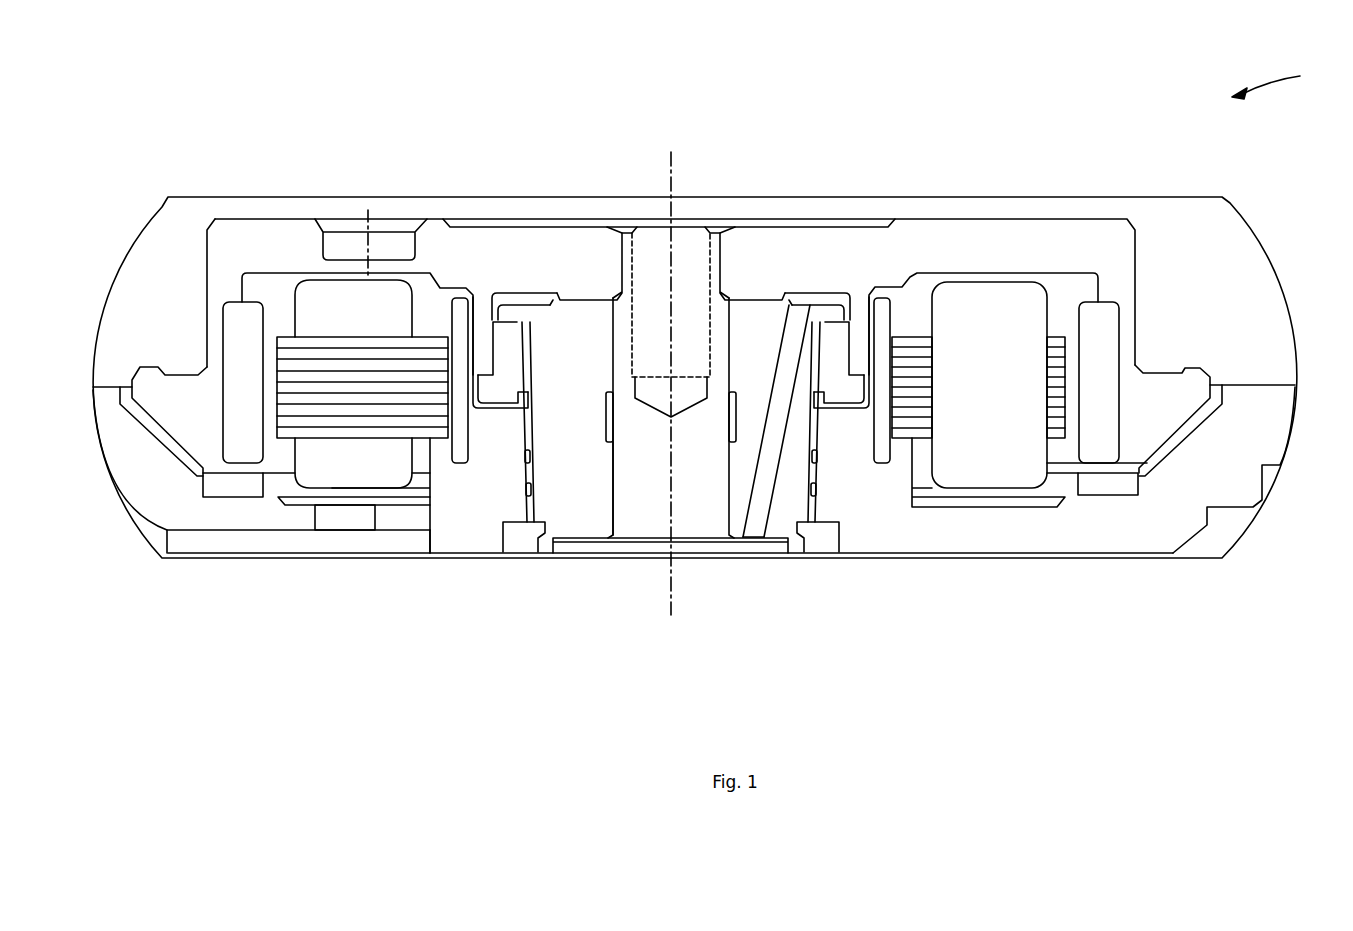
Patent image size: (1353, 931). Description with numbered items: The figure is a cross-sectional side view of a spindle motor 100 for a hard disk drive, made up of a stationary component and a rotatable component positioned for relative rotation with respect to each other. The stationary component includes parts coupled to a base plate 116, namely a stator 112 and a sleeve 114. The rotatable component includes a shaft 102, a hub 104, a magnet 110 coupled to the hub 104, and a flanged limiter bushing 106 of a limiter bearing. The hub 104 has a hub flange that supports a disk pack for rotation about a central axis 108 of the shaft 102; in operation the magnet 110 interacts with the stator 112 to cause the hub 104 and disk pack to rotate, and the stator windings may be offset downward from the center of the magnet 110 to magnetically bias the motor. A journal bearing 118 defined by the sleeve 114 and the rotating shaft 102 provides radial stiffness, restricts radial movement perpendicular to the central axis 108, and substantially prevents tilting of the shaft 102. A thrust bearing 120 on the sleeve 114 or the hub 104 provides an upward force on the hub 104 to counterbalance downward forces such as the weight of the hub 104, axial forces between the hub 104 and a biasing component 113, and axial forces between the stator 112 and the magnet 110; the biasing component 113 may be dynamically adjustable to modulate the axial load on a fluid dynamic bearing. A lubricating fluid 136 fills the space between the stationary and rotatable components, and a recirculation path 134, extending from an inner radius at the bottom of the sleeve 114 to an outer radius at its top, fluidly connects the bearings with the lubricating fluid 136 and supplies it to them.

The spindle motor 100 is at (1290, 83).
The shaft 102 is at (697, 525).
The hub 104 is at (982, 232).
The limiter bushing 106 is at (503, 330).
The central axis 108 is at (670, 172).
The magnet 110 is at (233, 327).
The stator 112 is at (337, 470).
The biasing component 113 is at (232, 487).
The sleeve 114 is at (573, 497).
The base plate 116 is at (458, 512).
The journal bearing 118 is at (610, 320).
The thrust bearing 120 is at (562, 295).
The recirculation path 134 is at (768, 458).
The lubricating fluid 136 is at (743, 537).